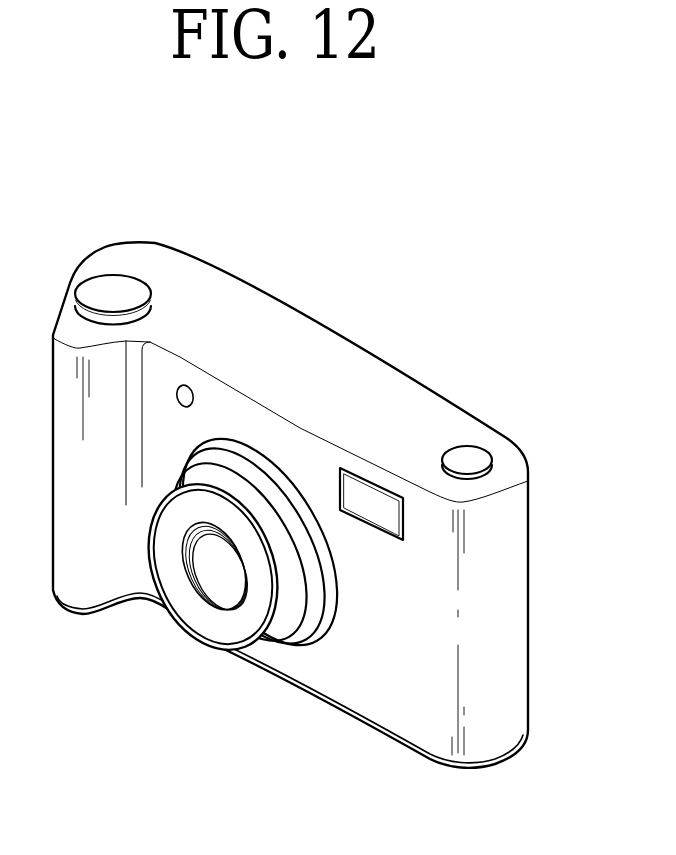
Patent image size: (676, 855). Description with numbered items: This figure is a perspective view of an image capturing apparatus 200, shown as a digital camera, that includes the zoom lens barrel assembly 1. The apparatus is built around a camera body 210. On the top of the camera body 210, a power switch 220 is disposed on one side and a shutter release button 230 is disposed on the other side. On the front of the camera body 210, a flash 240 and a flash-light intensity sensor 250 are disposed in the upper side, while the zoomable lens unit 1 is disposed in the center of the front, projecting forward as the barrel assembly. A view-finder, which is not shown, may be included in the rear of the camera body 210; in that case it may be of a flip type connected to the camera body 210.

The zoom lens barrel assembly 1 is at (207, 639).
The image capturing apparatus 200 is at (311, 170).
The camera body 210 is at (405, 698).
The power switch 220 is at (470, 458).
The shutter release button 230 is at (113, 288).
The flash 240 is at (370, 502).
The flash-light intensity sensor 250 is at (183, 385).